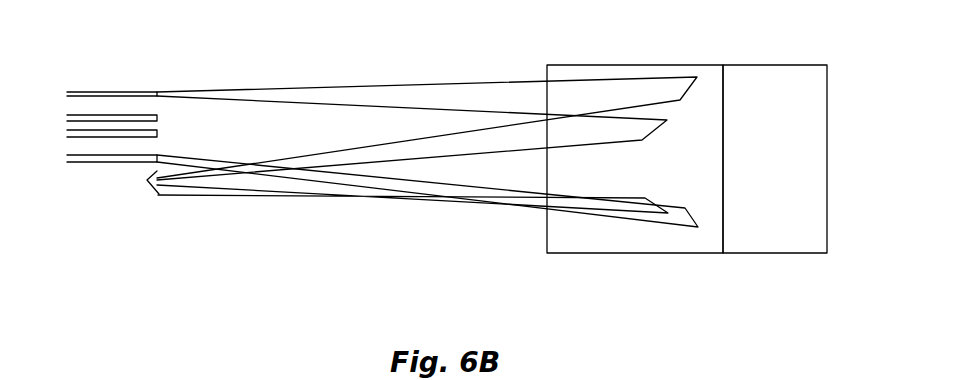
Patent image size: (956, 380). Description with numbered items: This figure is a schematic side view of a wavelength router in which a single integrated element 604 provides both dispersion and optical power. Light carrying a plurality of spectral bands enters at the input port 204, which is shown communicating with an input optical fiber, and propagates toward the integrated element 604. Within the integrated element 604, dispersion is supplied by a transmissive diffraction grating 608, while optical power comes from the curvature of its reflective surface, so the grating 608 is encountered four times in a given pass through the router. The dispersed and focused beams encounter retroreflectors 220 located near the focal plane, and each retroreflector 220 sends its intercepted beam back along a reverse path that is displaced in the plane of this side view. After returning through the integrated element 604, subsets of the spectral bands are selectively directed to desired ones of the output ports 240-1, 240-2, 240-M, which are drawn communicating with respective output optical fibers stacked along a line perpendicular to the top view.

The input port 204 is at (157, 91).
The output port 240-1 is at (157, 116).
The output port 240-2 is at (157, 131).
The output port 240-M is at (157, 155).
The retroreflector 220 is at (148, 180).
The transmissive diffraction grating 608 is at (623, 70).
The integrated element 604 is at (760, 82).